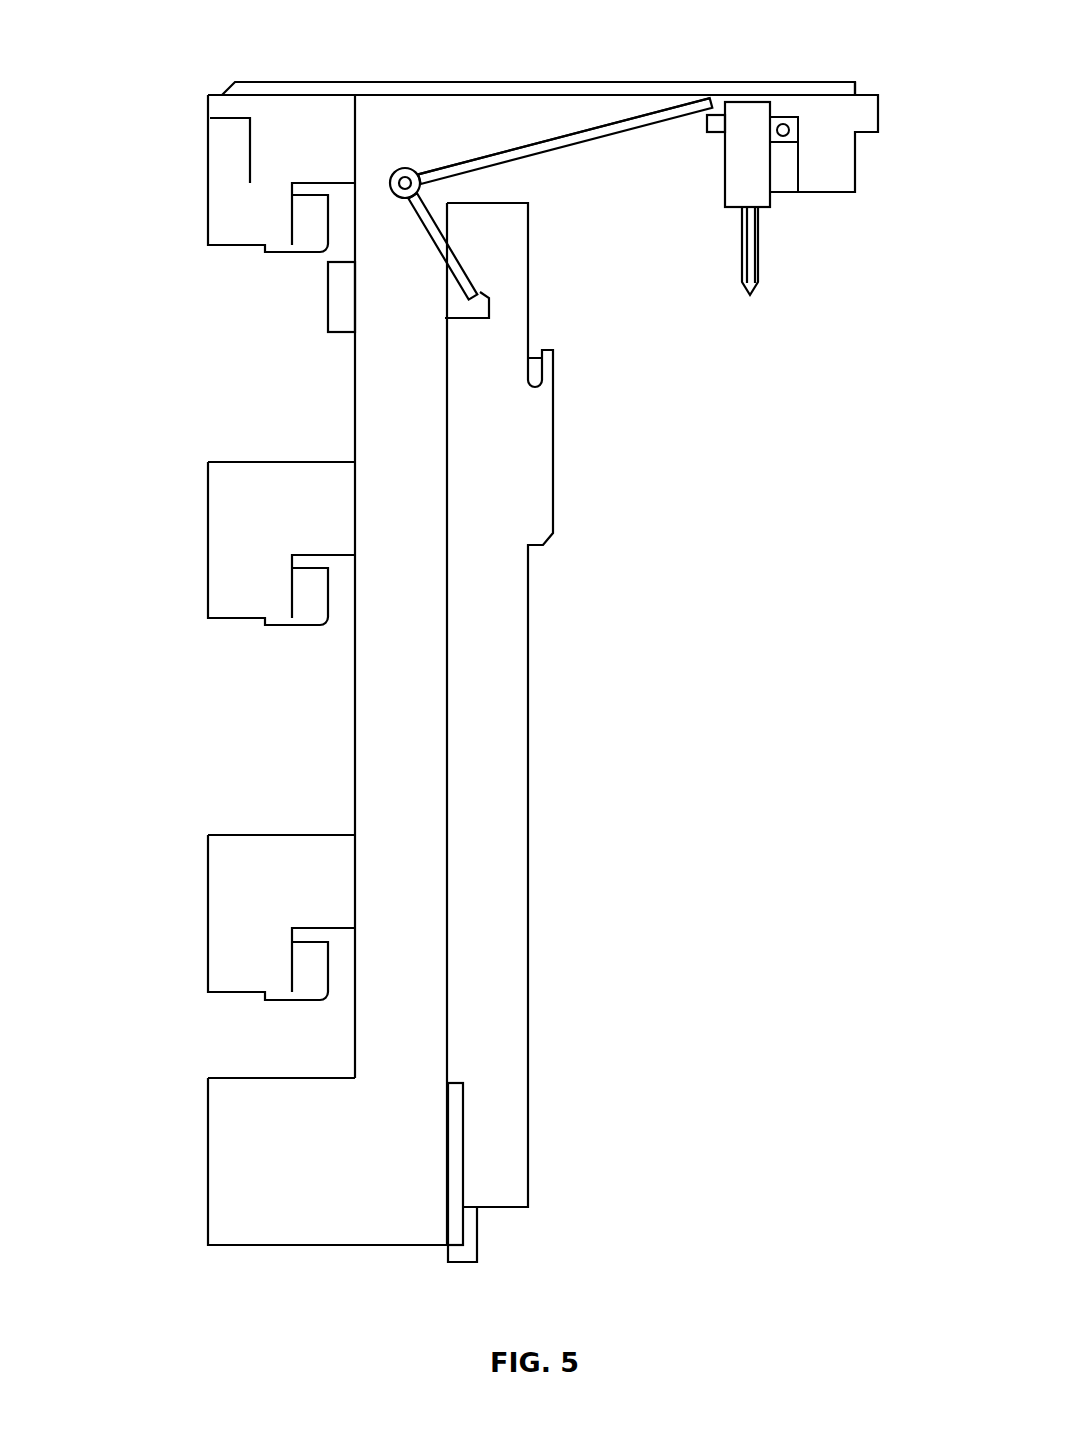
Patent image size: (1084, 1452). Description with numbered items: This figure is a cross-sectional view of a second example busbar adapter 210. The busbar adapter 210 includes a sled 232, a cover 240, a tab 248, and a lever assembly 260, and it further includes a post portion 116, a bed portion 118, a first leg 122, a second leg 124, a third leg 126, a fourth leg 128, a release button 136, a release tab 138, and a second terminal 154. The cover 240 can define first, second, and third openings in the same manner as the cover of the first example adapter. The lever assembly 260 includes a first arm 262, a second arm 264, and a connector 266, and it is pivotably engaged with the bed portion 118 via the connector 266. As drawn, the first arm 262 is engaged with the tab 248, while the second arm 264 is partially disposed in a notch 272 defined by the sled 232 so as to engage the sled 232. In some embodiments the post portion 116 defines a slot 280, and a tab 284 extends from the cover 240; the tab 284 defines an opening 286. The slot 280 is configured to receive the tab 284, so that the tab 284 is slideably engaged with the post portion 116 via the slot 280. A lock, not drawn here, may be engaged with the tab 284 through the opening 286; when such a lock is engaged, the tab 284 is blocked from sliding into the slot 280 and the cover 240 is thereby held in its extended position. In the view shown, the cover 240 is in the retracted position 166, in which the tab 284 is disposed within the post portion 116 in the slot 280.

The second example busbar connector 210 is at (140, 50).
The post portion 116 is at (650, 104).
The bed portion 118 is at (372, 692).
The first leg 122 is at (218, 107).
The second leg 124 is at (225, 566).
The third leg 126 is at (225, 928).
The fourth leg 128 is at (225, 1195).
The release button 136 is at (866, 102).
The release tab 138 is at (463, 1247).
The second terminal 154 is at (756, 292).
The retracted position 166 is at (711, 291).
The sled 232 is at (520, 620).
The cover 240 is at (737, 150).
The tab 248 is at (717, 113).
The lever assembly 260 is at (517, 146).
The first arm 262 is at (618, 124).
The second arm 264 is at (467, 282).
The connector 266 is at (405, 168).
The notch 272 is at (455, 303).
The slot 280 is at (782, 178).
The tab 284 is at (797, 120).
The opening 286 is at (791, 144).